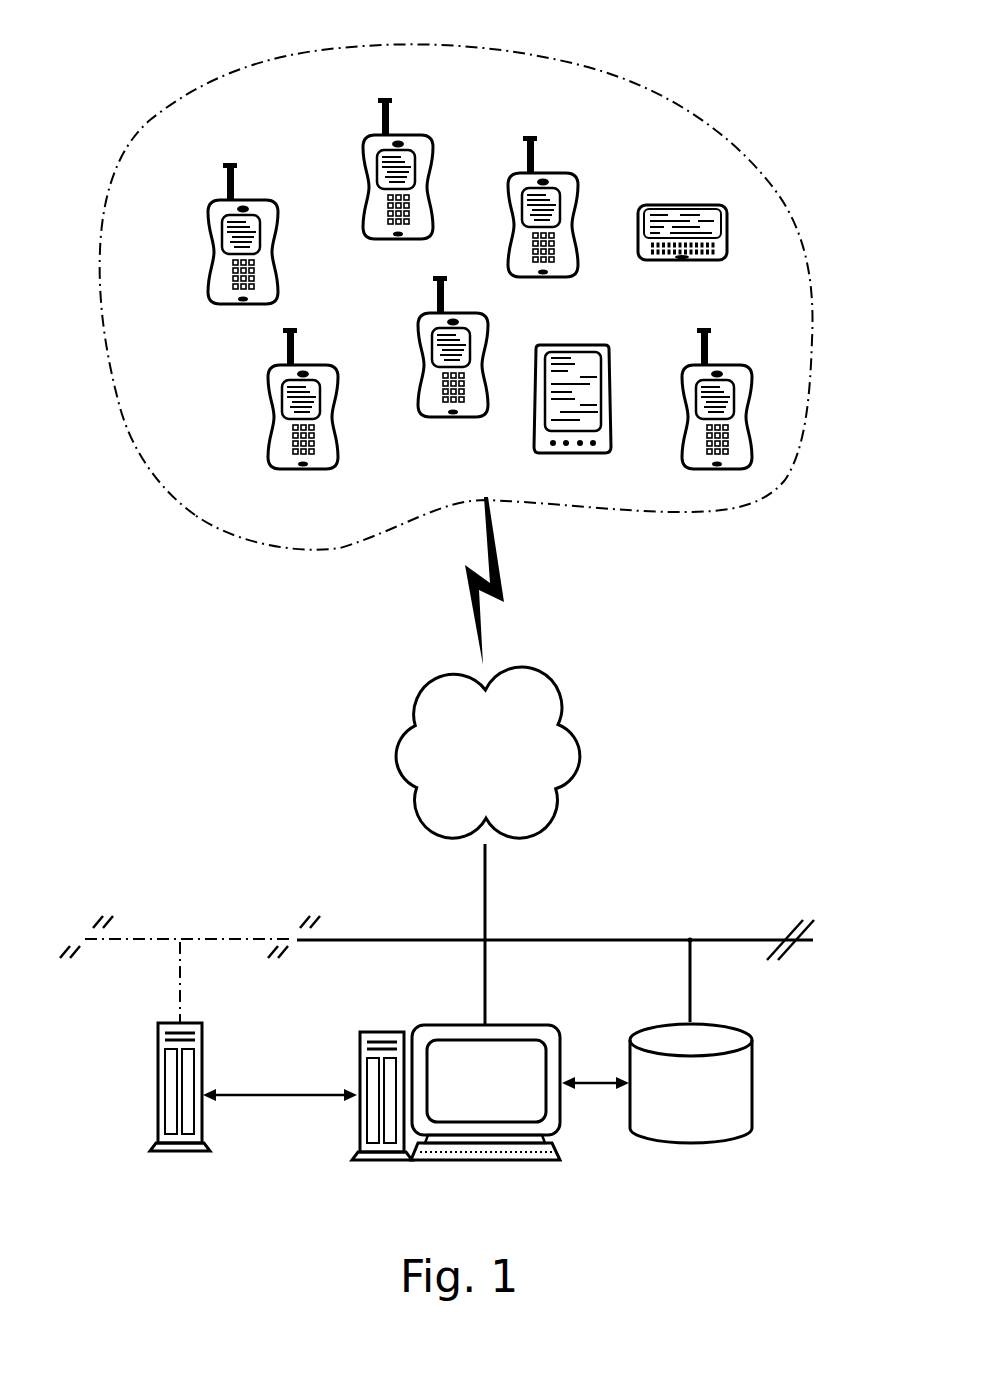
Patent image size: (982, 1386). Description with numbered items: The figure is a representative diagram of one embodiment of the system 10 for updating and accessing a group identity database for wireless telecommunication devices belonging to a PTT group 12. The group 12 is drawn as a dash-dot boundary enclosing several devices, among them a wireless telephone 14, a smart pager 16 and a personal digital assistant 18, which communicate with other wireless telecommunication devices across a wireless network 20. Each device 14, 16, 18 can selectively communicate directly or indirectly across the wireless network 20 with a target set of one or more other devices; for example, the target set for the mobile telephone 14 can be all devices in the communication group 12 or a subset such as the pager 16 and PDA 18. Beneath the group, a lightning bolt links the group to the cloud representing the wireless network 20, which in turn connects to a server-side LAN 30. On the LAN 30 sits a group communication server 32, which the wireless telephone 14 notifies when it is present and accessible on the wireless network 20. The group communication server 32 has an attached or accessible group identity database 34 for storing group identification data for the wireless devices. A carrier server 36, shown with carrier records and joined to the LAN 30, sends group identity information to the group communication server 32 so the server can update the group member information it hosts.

The system 10 is at (746, 66).
The PTT group 12 is at (175, 518).
The wireless telephone 14 is at (420, 133).
The smart pager 16 is at (685, 262).
The personal digital assistant 18 is at (536, 418).
The wireless network 20 is at (601, 757).
The server-side LAN 30 is at (335, 940).
The group communication server 32 is at (455, 1025).
The group identity database 34 is at (630, 1110).
The carrier server 36 is at (202, 1125).